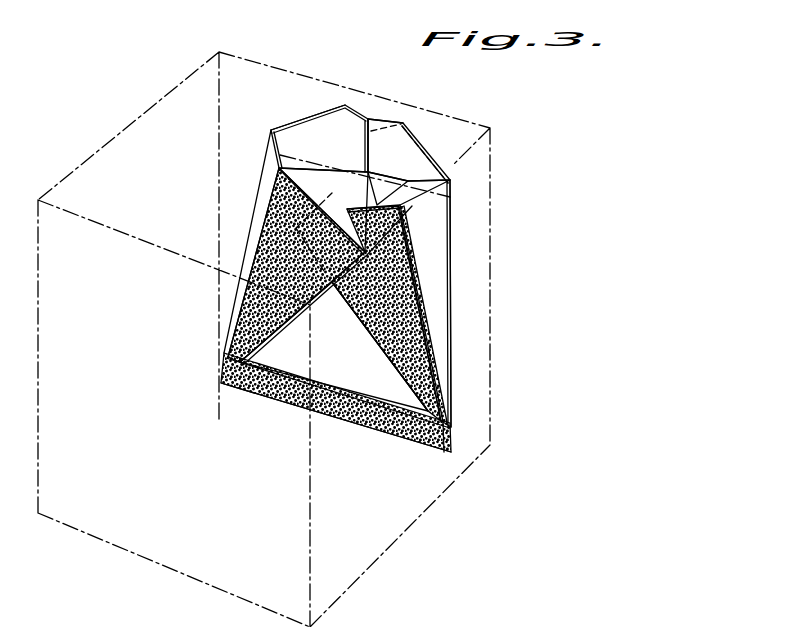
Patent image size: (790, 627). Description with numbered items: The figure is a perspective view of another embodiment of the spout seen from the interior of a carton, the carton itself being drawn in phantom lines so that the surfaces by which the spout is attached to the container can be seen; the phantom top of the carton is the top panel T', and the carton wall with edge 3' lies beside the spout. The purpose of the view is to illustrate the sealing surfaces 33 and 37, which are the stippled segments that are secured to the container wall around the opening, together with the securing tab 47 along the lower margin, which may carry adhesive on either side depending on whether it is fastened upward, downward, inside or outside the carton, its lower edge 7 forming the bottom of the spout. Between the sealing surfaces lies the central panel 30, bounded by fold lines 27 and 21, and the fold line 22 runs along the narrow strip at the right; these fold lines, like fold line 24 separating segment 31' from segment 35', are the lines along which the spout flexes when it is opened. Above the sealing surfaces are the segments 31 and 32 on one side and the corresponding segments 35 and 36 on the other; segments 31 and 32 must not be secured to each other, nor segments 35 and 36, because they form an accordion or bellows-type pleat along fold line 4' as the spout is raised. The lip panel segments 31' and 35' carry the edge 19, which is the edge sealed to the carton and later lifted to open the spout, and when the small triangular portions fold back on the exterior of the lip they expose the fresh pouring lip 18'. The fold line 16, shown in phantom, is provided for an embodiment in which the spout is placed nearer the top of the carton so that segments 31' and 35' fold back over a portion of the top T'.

The top panel of carton T' is at (264, 339).
The edge 19 is at (316, 114).
The pouring lip 18' is at (397, 94).
The fold line 16 is at (408, 181).
The fold line 4' is at (247, 241).
The segment 32 is at (264, 191).
The lip panel segment 31' is at (319, 138).
The segment 31 is at (323, 211).
The fold line 24 is at (367, 143).
The lip panel segment 35' is at (409, 151).
The segment 35 is at (377, 192).
The sealing surface segment 33 is at (295, 278).
The segment 36 is at (439, 246).
The sealing surface segment 37 is at (385, 303).
The bottom panel 30 is at (347, 343).
The fold line 27 is at (292, 335).
The fold line 21 is at (384, 350).
The fold line 22 is at (433, 355).
The mandrel edge 3' is at (464, 303).
The securing tab 47 is at (282, 386).
The bottom edge 7 is at (360, 422).